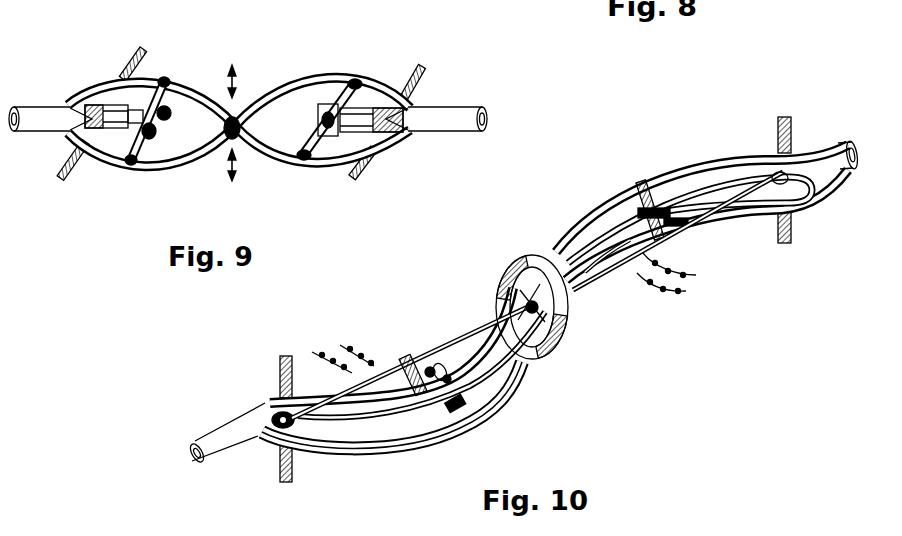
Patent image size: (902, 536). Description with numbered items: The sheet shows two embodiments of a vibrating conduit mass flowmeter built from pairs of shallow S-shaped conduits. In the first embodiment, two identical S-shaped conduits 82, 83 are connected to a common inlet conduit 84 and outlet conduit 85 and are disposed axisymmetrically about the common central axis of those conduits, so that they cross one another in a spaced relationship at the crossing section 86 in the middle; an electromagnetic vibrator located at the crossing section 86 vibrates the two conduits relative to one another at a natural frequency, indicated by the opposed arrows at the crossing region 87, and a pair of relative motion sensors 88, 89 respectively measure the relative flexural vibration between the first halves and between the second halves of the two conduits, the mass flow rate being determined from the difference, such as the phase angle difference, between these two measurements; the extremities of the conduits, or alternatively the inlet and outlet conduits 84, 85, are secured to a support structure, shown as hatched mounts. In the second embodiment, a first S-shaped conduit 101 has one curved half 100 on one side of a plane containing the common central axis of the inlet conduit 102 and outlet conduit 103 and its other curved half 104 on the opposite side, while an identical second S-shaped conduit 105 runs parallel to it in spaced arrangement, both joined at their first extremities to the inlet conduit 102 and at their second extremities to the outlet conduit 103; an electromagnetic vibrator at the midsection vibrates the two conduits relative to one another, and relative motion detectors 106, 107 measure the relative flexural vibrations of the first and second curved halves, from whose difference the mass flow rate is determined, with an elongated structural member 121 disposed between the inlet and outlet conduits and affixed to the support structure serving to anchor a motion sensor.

In FIG. 9, the S-shaped conduit 82 is at (196, 85).
In FIG. 9, the S-shaped conduit 83 is at (160, 172).
In FIG. 9, the inlet conduit 84 is at (43, 114).
In FIG. 9, the outlet conduit 85 is at (457, 107).
In FIG. 9, the crossing section 86 is at (254, 114).
In FIG. 9, the crossing point 87 is at (214, 127).
In FIG. 9, the relative motion sensor 88 is at (186, 132).
In FIG. 9, the relative motion sensor 89 is at (318, 117).
In FIG. 10, the curved half 100 is at (400, 447).
In FIG. 10, the first S-shaped conduit 101 is at (500, 297).
In FIG. 10, the inlet conduit 102 is at (223, 440).
In FIG. 10, the outlet conduit 103 is at (835, 152).
In FIG. 10, the curved half 104 is at (673, 167).
In FIG. 10, the second S-shaped conduit 105 is at (500, 390).
In FIG. 10, the relative motion detector 106 is at (450, 343).
In FIG. 10, the relative motion detector 107 is at (703, 227).
In FIG. 10, the elongated structural member 121 is at (613, 270).